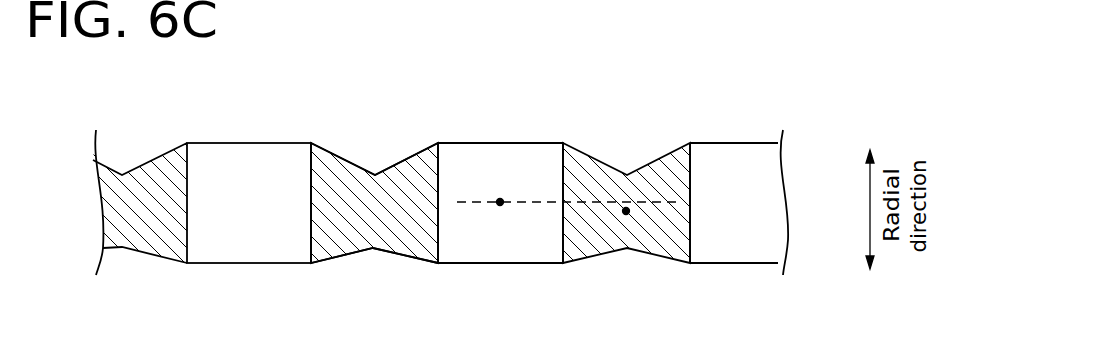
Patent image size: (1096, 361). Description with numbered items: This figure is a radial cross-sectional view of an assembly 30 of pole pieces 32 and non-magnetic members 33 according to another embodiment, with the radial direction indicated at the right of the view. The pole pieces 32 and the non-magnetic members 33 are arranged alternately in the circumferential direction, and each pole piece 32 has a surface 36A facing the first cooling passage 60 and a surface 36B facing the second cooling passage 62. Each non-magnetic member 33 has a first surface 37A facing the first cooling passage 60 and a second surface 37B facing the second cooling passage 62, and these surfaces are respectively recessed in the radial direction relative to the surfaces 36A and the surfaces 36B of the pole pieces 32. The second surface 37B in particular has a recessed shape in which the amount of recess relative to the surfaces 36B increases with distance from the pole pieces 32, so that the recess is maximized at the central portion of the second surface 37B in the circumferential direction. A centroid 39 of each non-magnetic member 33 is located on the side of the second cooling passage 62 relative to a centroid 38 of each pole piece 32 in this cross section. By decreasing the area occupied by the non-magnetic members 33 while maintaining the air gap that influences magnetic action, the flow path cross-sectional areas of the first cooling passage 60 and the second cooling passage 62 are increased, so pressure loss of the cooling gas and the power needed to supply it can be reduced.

The permanent magnet 30 is at (358, 83).
The pole piece 32 is at (258, 170).
The non-magnetic member 33 is at (335, 167).
The surface of pole piece 36A is at (499, 143).
The surface of pole piece 36B is at (450, 263).
The first surface 37A is at (412, 152).
The second surface 37B is at (373, 248).
The centroid of pole piece 38 is at (500, 202).
The centroid of non-magnetic member 39 is at (626, 211).
The first cooling passage 60 is at (732, 115).
The second cooling passage 62 is at (732, 327).